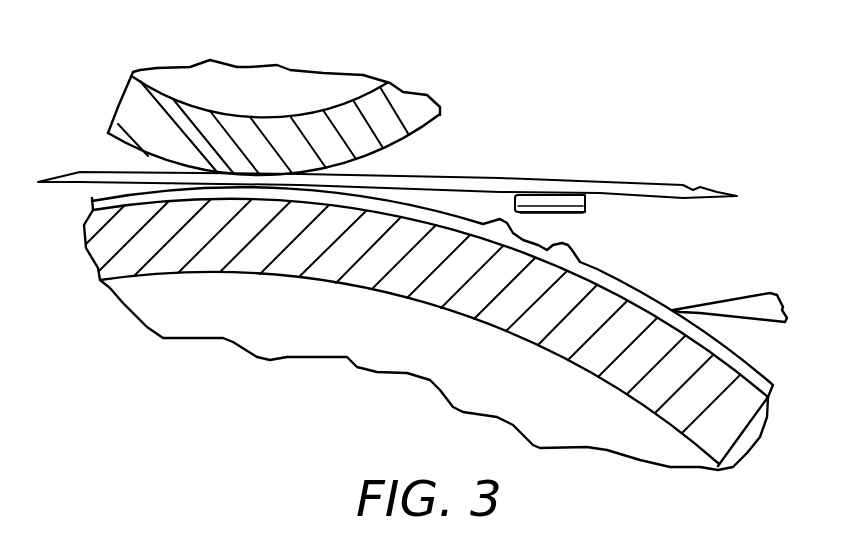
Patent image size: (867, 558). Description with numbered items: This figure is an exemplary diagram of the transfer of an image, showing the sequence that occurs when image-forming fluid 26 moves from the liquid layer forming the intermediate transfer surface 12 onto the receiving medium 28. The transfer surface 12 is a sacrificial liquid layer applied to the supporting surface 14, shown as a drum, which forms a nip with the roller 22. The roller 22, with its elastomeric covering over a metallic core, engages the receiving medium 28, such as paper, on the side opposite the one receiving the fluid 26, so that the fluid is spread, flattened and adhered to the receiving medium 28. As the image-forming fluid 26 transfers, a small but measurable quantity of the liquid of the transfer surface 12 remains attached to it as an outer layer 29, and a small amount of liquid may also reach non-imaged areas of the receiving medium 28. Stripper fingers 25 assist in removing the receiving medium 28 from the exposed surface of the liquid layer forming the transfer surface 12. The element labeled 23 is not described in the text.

The transfer surface 12 is at (760, 364).
The supporting surface 14 is at (546, 349).
The roller 22 is at (411, 137).
The roller body 23 is at (325, 88).
The stripper fingers 25 is at (730, 296).
The image-forming fluid 26 is at (567, 217).
The receiving medium 28 is at (607, 181).
The outer layer 29 is at (585, 201).